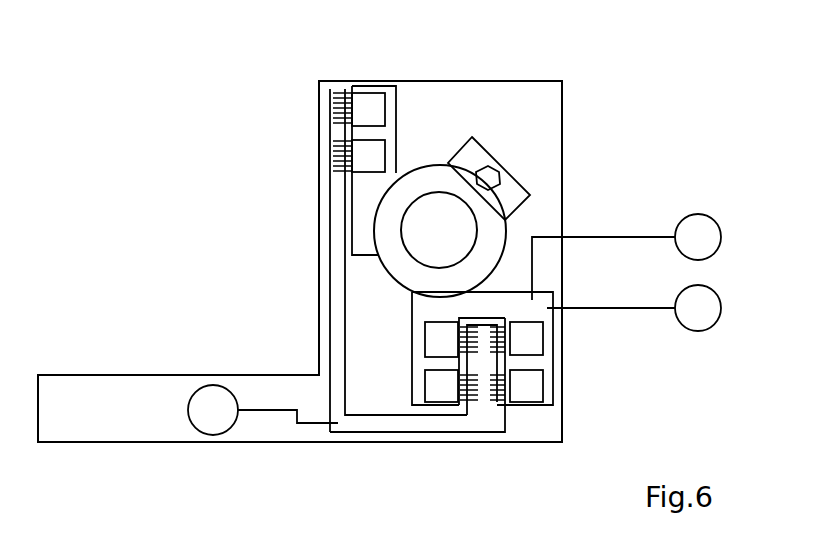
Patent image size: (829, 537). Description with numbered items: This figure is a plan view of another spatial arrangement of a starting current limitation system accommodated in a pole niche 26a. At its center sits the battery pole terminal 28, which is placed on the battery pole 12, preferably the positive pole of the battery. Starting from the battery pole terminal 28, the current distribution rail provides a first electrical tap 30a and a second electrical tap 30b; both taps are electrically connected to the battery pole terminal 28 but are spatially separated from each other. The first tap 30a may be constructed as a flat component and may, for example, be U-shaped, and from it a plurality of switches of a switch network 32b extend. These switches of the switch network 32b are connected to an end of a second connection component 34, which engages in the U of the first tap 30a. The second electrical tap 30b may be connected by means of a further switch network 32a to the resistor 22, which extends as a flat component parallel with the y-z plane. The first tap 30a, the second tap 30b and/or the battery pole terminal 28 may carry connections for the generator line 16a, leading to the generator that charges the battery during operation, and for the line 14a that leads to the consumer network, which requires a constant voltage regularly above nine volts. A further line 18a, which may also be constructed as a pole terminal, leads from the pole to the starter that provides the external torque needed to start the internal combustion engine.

The second battery pole 12 is at (450, 243).
The first line 14a is at (628, 237).
The generator line 16a is at (640, 312).
The starter line 18a is at (270, 410).
The resistor 22 is at (335, 298).
The pole niche 26a is at (517, 127).
The battery pole terminal 28 is at (435, 175).
The first electrical tap 30a is at (548, 362).
The second electrical tap 30b is at (357, 193).
The switch network 32a is at (372, 110).
The switch network 32b is at (545, 393).
The second connection component 34 is at (398, 423).